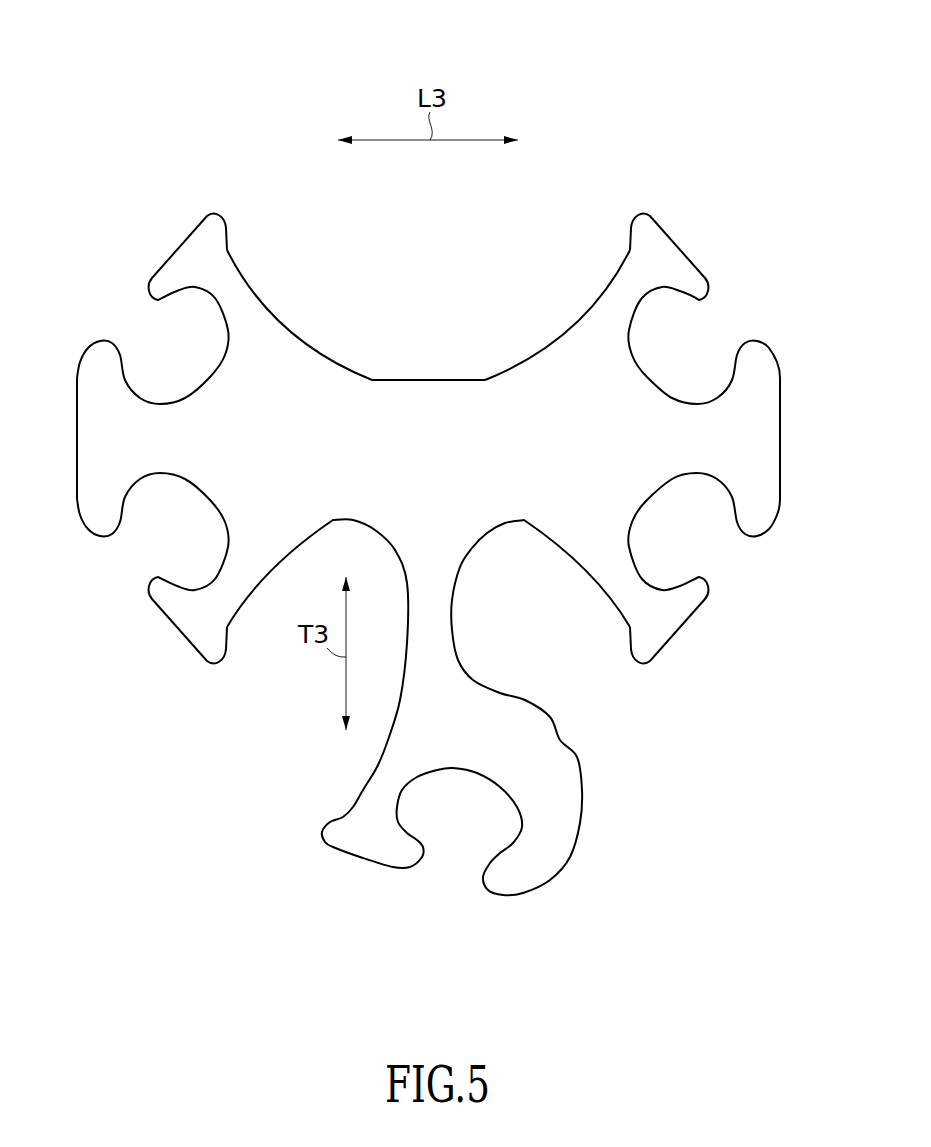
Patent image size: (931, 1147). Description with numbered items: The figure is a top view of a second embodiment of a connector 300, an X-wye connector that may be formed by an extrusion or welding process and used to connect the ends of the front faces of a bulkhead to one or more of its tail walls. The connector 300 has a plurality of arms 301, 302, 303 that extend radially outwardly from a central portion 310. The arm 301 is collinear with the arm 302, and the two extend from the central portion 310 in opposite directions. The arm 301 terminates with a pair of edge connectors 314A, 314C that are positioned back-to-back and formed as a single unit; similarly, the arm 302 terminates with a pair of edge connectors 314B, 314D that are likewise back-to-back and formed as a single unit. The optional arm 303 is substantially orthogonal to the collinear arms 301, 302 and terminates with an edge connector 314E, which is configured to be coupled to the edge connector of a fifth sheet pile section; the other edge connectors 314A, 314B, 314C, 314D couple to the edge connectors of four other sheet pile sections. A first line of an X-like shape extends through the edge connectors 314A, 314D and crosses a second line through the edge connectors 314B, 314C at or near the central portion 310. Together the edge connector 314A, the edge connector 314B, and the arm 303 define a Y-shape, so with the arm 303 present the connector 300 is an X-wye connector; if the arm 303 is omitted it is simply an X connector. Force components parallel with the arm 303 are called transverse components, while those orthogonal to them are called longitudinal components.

The connector 300 is at (672, 85).
The arm 301 is at (270, 383).
The arm 302 is at (587, 383).
The arm 303 is at (430, 667).
The central portion 310 is at (432, 463).
The edge connector 314A is at (233, 295).
The edge connector 314B is at (628, 290).
The edge connector 314C is at (227, 587).
The edge connector 314D is at (628, 588).
The edge connector 314E is at (385, 790).